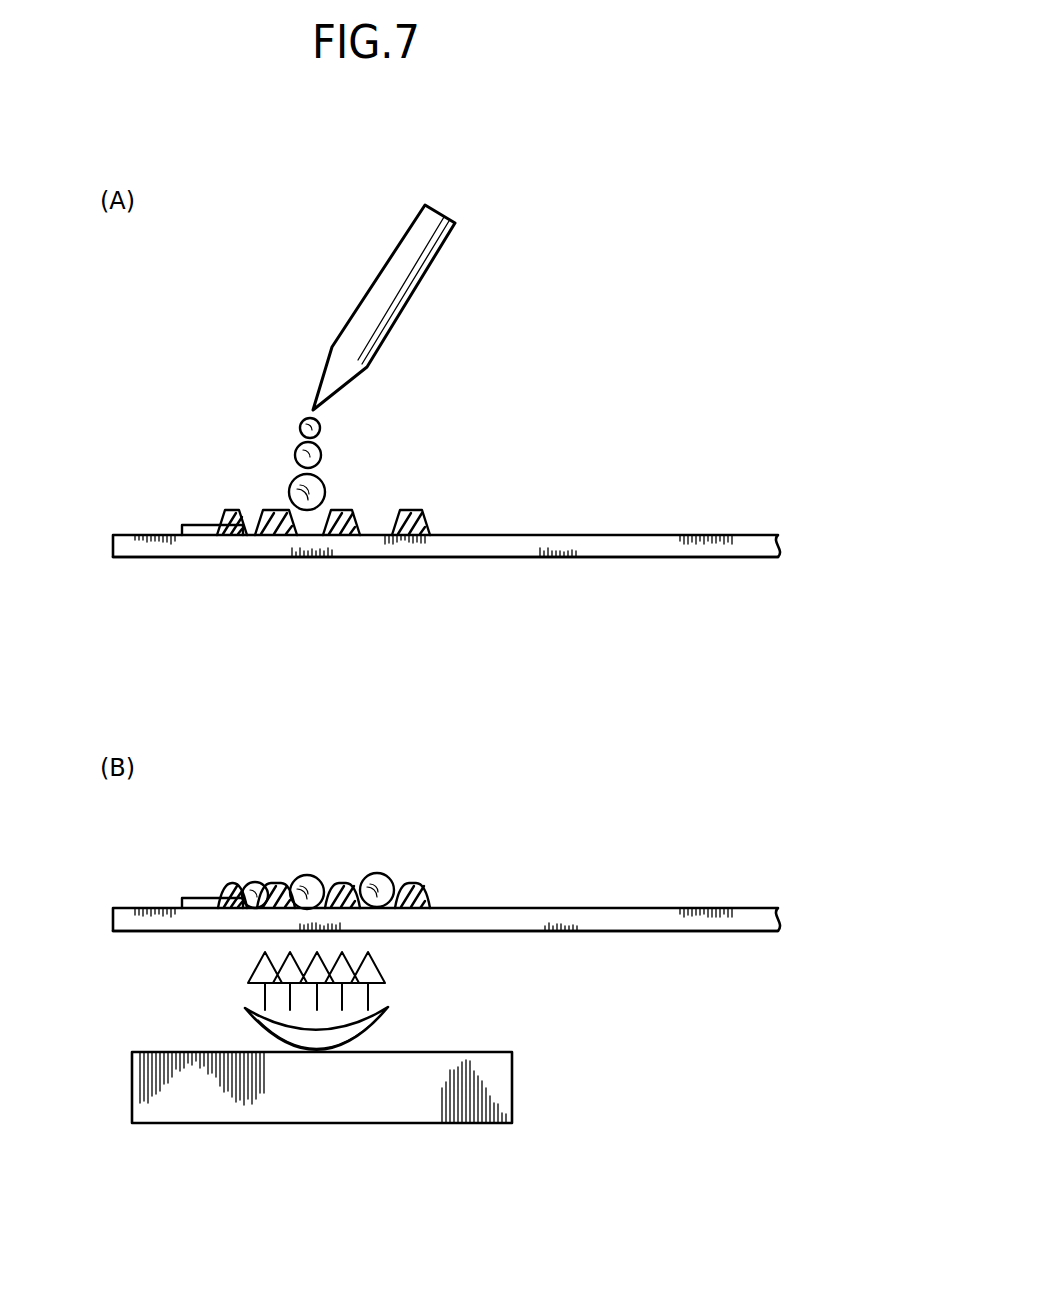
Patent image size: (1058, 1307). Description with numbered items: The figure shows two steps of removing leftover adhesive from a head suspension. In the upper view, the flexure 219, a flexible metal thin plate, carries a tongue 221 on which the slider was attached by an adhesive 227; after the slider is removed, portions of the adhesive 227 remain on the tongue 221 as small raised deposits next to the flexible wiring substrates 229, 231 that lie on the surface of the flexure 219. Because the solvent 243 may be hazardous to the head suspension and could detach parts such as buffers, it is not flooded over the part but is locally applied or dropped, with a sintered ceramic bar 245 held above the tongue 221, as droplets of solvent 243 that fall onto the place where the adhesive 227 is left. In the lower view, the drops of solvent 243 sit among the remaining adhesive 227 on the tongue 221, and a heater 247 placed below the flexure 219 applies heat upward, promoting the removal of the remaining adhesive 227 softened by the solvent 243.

In FIG. 7A, the flexure 219 is at (678, 542).
In FIG. 7B, the flexure 219 is at (677, 917).
In FIG. 7A, the tongue 221 is at (350, 543).
In FIG. 7B, the tongue 221 is at (460, 922).
In FIG. 7A, the adhesive 227 is at (281, 510).
In FIG. 7B, the adhesive 227 is at (280, 882).
In FIG. 7A, the flexible wiring substrate 229 is at (202, 582).
In FIG. 7B, the flexible wiring substrate 229 is at (183, 957).
In FIG. 7A, the flexible wiring substrate 231 is at (200, 532).
In FIG. 7B, the flexible wiring substrate 231 is at (197, 908).
In FIG. 7A, the solvent 243 is at (325, 492).
In FIG. 7B, the solvent 243 is at (378, 873).
In FIG. 7A, the sintered ceramic bar 245 is at (403, 278).
In FIG. 7B, the heater 247 is at (513, 1092).